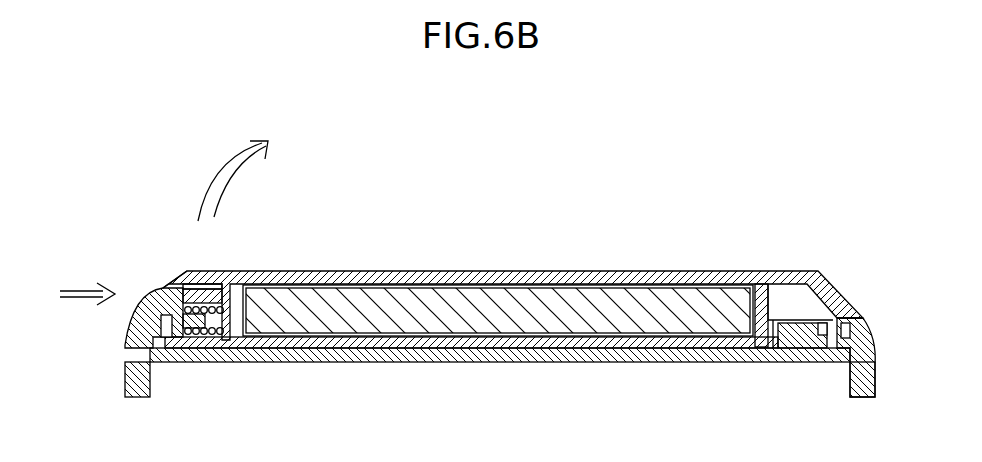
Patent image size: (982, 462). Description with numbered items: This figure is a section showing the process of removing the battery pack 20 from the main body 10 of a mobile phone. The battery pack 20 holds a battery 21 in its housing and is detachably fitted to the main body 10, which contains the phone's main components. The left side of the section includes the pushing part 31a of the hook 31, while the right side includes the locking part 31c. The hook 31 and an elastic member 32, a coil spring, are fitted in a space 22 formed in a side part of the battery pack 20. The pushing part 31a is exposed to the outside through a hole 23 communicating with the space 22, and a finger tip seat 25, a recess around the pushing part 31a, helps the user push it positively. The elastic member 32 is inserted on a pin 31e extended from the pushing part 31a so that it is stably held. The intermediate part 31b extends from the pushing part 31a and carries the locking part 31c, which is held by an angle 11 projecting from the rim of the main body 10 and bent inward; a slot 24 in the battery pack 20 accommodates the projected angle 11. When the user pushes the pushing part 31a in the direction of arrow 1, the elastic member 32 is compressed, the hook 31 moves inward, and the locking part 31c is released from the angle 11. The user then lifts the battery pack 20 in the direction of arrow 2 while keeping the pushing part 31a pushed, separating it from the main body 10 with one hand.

The arrow 1 is at (77, 294).
The arrow 2 is at (242, 173).
The main body 10 is at (453, 363).
The angle 11 is at (840, 314).
The battery pack 20 is at (477, 274).
The battery 21 is at (576, 298).
The space 22 is at (210, 295).
The hole 23 is at (190, 288).
The slot 24 is at (865, 316).
The finger tip seat 25 is at (177, 283).
The hook 31 is at (795, 344).
The pushing part 31a is at (155, 305).
The intermediate part 31b is at (161, 328).
The locking part 31c is at (850, 333).
The pin 31e is at (207, 334).
The elastic member 32 is at (212, 334).